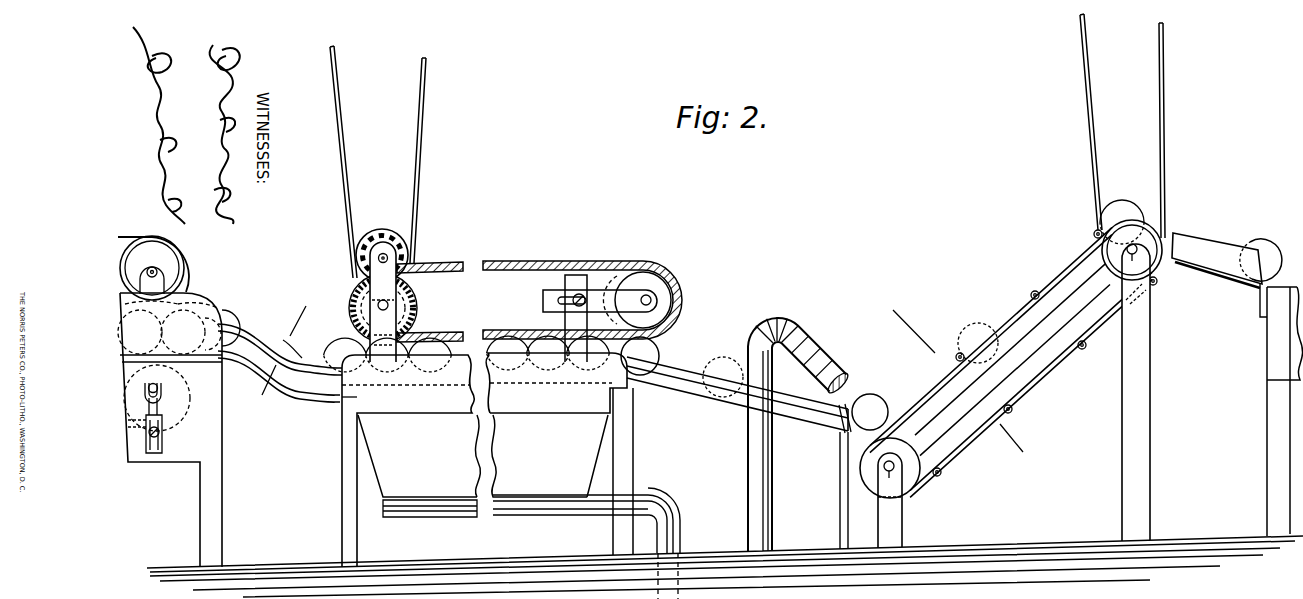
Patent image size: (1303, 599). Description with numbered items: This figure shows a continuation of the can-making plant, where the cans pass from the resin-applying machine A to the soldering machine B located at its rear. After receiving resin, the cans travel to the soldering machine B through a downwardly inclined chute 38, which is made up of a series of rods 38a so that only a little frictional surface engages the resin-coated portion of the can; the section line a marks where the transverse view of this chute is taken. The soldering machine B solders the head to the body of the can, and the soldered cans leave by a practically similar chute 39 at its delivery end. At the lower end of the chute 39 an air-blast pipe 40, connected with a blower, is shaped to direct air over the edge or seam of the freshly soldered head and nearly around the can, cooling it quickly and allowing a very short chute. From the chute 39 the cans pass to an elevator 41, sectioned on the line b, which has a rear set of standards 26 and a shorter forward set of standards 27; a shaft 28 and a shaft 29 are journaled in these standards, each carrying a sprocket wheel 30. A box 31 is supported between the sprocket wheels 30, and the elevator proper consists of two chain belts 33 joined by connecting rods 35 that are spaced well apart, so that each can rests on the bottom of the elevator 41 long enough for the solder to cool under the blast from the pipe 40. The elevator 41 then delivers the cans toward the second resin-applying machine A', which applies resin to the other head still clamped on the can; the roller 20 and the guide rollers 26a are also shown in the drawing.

The roller 20 is at (1152, 232).
The rear set of standards 26 is at (1150, 393).
The guide rollers 26a is at (809, 376).
The forward set of standards 27 is at (890, 500).
The shaft 28 is at (888, 478).
The shaft 29 is at (1130, 258).
The sprocket wheel 30 is at (906, 459).
The box 31 is at (1011, 363).
The link or chain belts 33 is at (955, 360).
The connecting rods 35 is at (1035, 291).
The chute 38 is at (300, 392).
The rods 38a is at (289, 343).
The chute 39 is at (725, 402).
The pipe 40 is at (820, 346).
The elevator 41 is at (1012, 360).
The resin-applying machine A is at (179, 401).
The resin-applying machine A' is at (1237, 384).
The soldering machine B is at (443, 322).
The line a— a is at (276, 348).
The line b— b is at (956, 381).